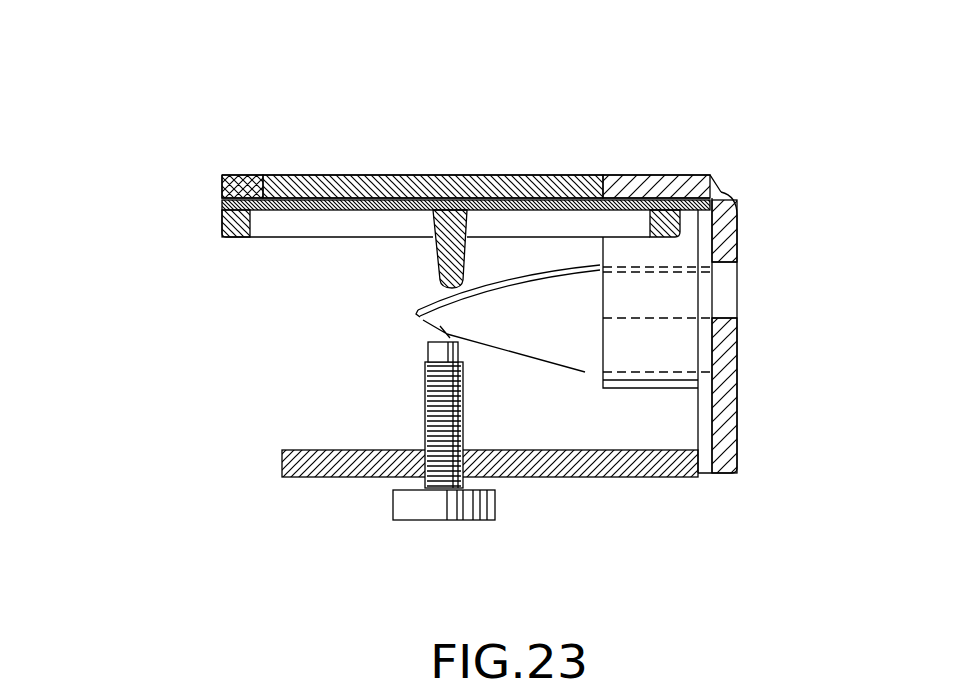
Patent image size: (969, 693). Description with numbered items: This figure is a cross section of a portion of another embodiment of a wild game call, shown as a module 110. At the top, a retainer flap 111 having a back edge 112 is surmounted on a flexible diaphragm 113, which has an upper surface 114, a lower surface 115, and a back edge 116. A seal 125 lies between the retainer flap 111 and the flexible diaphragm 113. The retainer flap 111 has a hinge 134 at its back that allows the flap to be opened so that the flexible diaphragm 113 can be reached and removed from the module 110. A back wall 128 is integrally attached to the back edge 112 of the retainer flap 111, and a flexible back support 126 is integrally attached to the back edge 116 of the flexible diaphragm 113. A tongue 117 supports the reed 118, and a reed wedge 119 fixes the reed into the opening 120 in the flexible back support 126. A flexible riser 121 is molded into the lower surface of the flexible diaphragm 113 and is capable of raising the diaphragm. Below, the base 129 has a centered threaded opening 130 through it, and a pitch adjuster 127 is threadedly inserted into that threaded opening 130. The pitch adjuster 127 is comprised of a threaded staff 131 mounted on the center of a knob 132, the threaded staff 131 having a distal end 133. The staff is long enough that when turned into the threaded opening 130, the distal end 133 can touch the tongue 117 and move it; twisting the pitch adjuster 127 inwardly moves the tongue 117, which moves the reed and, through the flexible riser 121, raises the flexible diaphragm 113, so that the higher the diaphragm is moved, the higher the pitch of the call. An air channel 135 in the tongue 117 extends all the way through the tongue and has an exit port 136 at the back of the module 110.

The module 110 is at (198, 330).
The retainer flap 111 is at (248, 187).
The back edge 112 is at (725, 180).
The flexible diaphragm 113 is at (362, 197).
The upper surface 114 is at (510, 195).
The lower surface 115 is at (317, 238).
The back edge 116 is at (720, 183).
The tongue 117 is at (425, 323).
The reed 118 is at (420, 310).
The reed wedge 119 is at (675, 200).
The opening 120 is at (707, 343).
The flexible riser 121 is at (445, 270).
The seal 125 is at (222, 210).
The flexible back support 126 is at (703, 433).
The pitch adjuster 127 is at (343, 511).
The back wall 128 is at (727, 235).
The base 129 is at (282, 462).
The threaded opening 130 is at (437, 458).
The threaded staff 131 is at (437, 352).
The knob 132 is at (452, 510).
The distal end 133 is at (467, 333).
The hinge 134 is at (715, 180).
The air channel 135 is at (562, 295).
The exit port 136 is at (727, 295).